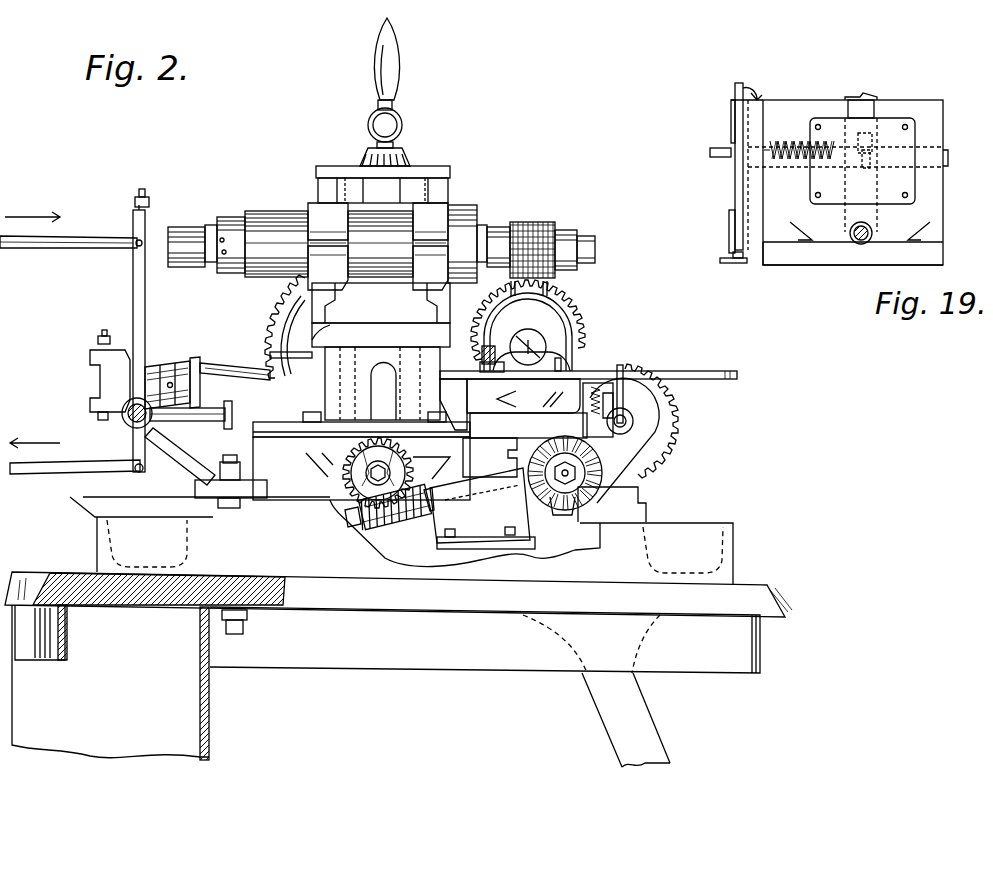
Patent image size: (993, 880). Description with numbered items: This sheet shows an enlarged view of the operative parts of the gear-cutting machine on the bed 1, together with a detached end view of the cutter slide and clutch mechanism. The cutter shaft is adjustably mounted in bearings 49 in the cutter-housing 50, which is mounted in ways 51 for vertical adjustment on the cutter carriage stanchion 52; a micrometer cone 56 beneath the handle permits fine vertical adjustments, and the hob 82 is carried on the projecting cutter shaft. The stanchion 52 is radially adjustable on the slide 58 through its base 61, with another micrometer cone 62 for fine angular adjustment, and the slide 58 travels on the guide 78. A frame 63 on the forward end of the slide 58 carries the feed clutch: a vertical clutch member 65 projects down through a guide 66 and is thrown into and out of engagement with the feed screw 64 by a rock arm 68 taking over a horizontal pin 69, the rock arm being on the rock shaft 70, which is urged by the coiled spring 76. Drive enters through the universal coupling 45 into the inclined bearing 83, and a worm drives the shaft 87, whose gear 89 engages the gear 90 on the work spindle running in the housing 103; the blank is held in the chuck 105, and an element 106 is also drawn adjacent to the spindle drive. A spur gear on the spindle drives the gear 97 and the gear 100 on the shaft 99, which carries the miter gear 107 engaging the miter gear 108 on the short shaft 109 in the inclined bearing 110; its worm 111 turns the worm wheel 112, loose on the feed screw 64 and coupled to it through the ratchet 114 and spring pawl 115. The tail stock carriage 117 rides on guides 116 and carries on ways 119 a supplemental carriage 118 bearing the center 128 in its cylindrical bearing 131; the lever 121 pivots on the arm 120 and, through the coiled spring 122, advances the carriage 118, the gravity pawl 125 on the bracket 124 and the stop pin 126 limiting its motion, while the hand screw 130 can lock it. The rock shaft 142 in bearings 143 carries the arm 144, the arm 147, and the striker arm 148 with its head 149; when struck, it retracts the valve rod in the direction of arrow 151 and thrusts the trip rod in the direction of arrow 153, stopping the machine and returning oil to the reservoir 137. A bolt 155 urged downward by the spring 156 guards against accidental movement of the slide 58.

In FIG. 2, the bed 1 is at (398, 669).
In FIG. 2, the universal coupling 45 is at (15, 248).
In FIG. 2, the bearings 49 is at (450, 205).
In FIG. 2, the cutter-housing 50 is at (381, 303).
In FIG. 2, the ways 51 is at (390, 358).
In FIG. 2, the cutter carriage stanchion 52 is at (316, 186).
In FIG. 2, the micrometer cone 56 is at (410, 162).
In FIG. 2, the slide 58 is at (270, 460).
In FIG. 19, the slide 58 is at (853, 231).
In FIG. 2, the base 61 is at (361, 428).
In FIG. 2, the micrometer cone 62 is at (268, 434).
In FIG. 19, the frame 63 is at (798, 100).
In FIG. 2, the feed screw 64 is at (390, 466).
In FIG. 19, the feed screw 64 is at (870, 238).
In FIG. 19, the clutch member 65 is at (872, 191).
In FIG. 19, the guide 66 is at (872, 104).
In FIG. 19, the rock arm 68 is at (872, 140).
In FIG. 19, the horizontal pin 69 is at (872, 158).
In FIG. 19, the rock shaft 70 is at (950, 162).
In FIG. 19, the coiled spring 76 is at (799, 139).
In FIG. 2, the guide 78 is at (318, 463).
In FIG. 19, the guide 78 is at (810, 256).
In FIG. 2, the hob 82 is at (535, 224).
In FIG. 2, the inclined bearing 83 is at (240, 366).
In FIG. 2, the shaft 87 is at (170, 365).
In FIG. 2, the gear 89 is at (276, 298).
In FIG. 2, the gear 90 is at (577, 306).
In FIG. 2, the gear 97 is at (655, 432).
In FIG. 2, the shaft 99 is at (634, 408).
In FIG. 2, the gear 100 is at (660, 452).
In FIG. 2, the housing 103 is at (572, 325).
In FIG. 2, the chuck 105 is at (528, 347).
In FIG. 2, the shaft 106 is at (555, 515).
In FIG. 2, the miter gear 107 is at (602, 487).
In FIG. 2, the miter gear 108 is at (545, 460).
In FIG. 2, the short shaft 109 is at (430, 514).
In FIG. 2, the inclined bearing 110 is at (482, 508).
In FIG. 2, the worm 111 is at (372, 532).
In FIG. 2, the worm wheel 112 is at (348, 485).
In FIG. 2, the ratchet 114 is at (392, 478).
In FIG. 2, the spring pawl 115 is at (356, 452).
In FIG. 2, the guides 116 is at (490, 457).
In FIG. 2, the tail stock carriage 117 is at (528, 425).
In FIG. 2, the supplemental carriage 118 is at (523, 396).
In FIG. 2, the ways 119 is at (530, 399).
In FIG. 2, the arm 120 is at (449, 399).
In FIG. 2, the lever 121 is at (678, 370).
In FIG. 2, the coiled spring 122 is at (483, 356).
In FIG. 2, the bracket 124 is at (598, 410).
In FIG. 2, the gravity pawl 125 is at (625, 375).
In FIG. 2, the stop pin 126 is at (555, 368).
In FIG. 2, the center 128 is at (520, 362).
In FIG. 2, the hand screw 130 is at (590, 412).
In FIG. 2, the cylindrical bearing 131 is at (512, 330).
In FIG. 2, the reservoir 137 is at (200, 684).
In FIG. 2, the rock shaft 142 is at (128, 422).
In FIG. 2, the bearings 143 is at (206, 466).
In FIG. 2, the arm 144 is at (146, 316).
In FIG. 2, the arm 147 is at (90, 470).
In FIG. 2, the striker arm 148 is at (215, 378).
In FIG. 2, the head 149 is at (232, 408).
In FIG. 2, the arrow 151 is at (32, 210).
In FIG. 2, the arrow 153 is at (35, 436).
In FIG. 19, the bolt 155 is at (739, 83).
In FIG. 19, the spring 156 is at (760, 88).